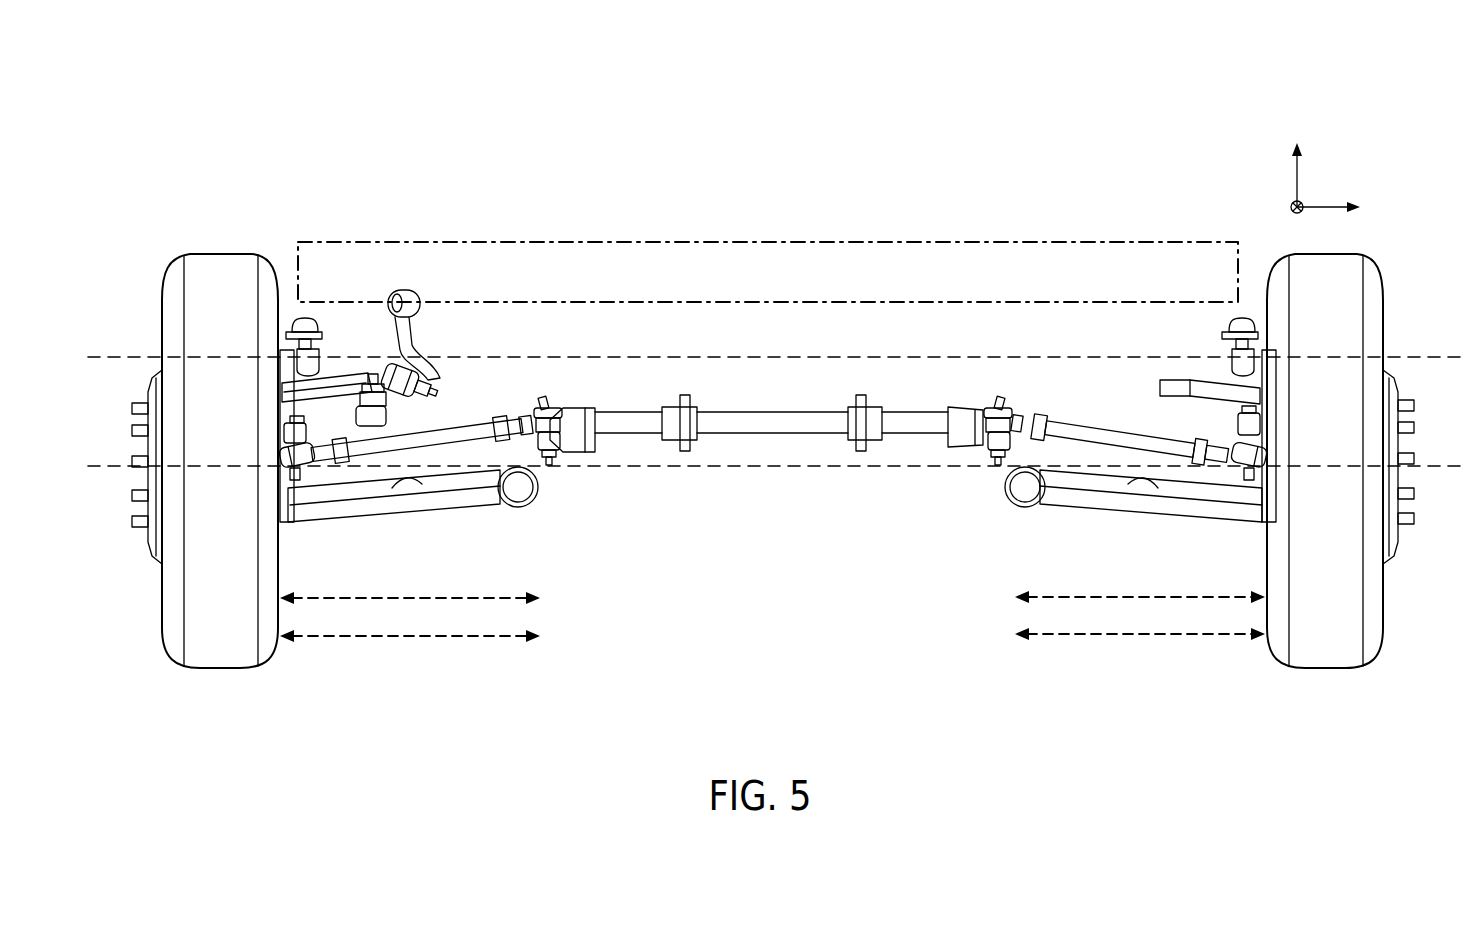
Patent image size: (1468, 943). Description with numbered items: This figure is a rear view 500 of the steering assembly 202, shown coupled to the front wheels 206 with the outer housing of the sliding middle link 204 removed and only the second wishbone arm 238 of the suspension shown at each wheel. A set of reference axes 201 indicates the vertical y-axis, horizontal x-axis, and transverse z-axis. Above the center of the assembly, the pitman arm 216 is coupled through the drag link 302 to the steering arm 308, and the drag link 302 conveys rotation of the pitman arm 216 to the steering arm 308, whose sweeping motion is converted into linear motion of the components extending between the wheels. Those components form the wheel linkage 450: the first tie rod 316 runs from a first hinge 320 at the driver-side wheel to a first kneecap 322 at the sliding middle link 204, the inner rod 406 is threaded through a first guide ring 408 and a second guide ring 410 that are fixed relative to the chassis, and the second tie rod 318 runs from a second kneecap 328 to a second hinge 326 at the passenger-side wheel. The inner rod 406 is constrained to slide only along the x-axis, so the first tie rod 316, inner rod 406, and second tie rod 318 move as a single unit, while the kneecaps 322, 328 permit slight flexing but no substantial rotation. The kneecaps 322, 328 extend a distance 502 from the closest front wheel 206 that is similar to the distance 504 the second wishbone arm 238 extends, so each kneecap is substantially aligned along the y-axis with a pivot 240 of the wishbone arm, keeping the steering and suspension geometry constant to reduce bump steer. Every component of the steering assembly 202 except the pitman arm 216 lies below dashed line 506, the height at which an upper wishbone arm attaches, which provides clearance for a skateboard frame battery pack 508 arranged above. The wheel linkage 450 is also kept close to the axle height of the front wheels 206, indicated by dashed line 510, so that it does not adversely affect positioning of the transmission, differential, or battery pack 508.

The rear view 500 is at (245, 110).
The reference axes 201 is at (1335, 170).
The skateboard frame battery pack 508 is at (806, 238).
The dashed line 506 is at (118, 358).
The dashed line 510 is at (113, 468).
The front wheels 206 is at (222, 650).
The pitman arm 216 is at (422, 326).
The steering arm 308 is at (330, 385).
The drag link 302 is at (410, 398).
The first hinge 320 is at (292, 430).
The first kneecap 322 is at (562, 412).
The second hinge 326 is at (1258, 420).
The second kneecap 328 is at (985, 440).
The first tie rod 316 is at (488, 430).
The second tie rod 318 is at (1078, 430).
The inner rod 406 is at (812, 433).
The first guide ring 408 is at (683, 450).
The second guide ring 410 is at (858, 450).
The sliding middle link 204 is at (740, 480).
The second wishbone arm 238 is at (470, 498).
The pivot 240 is at (516, 500).
The distance 502 is at (368, 596).
The distance 504 is at (396, 640).
The wheel linkage 450 is at (737, 605).
The steering assembly 202 is at (818, 645).